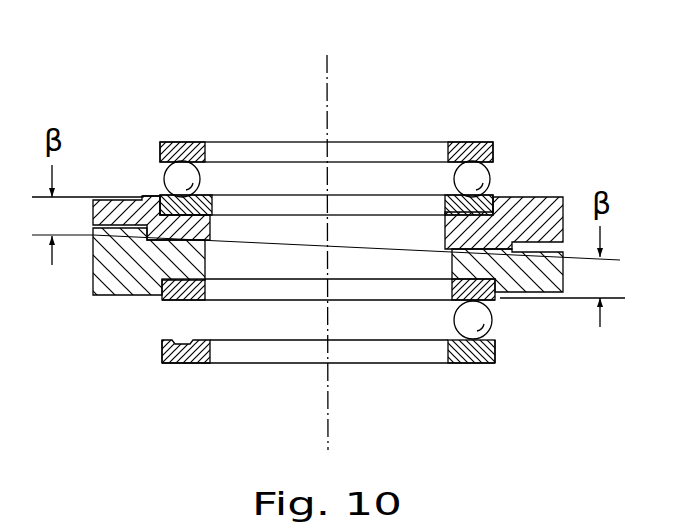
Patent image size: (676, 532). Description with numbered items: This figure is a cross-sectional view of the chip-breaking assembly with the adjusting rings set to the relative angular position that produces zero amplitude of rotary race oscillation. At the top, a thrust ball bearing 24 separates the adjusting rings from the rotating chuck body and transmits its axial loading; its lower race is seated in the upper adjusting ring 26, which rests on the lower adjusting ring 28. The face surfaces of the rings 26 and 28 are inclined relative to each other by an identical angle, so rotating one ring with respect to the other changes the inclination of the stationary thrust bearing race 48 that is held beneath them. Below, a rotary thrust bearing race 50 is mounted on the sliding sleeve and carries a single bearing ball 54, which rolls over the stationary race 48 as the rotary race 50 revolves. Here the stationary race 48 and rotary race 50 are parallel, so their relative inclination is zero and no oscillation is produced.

The thrust ball bearing 24 is at (495, 160).
The upper adjusting ring 26 is at (558, 198).
The lower adjusting ring 28 is at (120, 282).
The stationary thrust bearing race 48 is at (185, 295).
The rotary thrust bearing race 50 is at (397, 350).
The bearing ball 54 is at (489, 334).